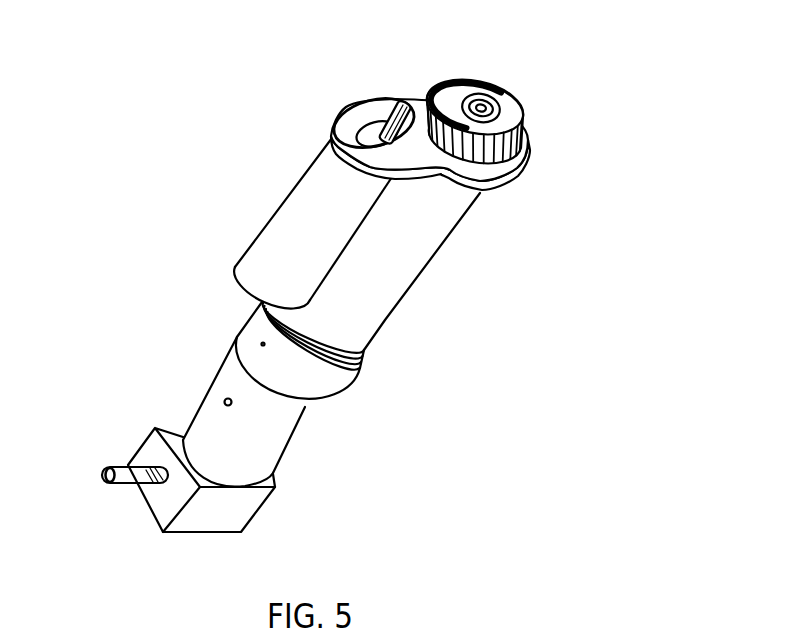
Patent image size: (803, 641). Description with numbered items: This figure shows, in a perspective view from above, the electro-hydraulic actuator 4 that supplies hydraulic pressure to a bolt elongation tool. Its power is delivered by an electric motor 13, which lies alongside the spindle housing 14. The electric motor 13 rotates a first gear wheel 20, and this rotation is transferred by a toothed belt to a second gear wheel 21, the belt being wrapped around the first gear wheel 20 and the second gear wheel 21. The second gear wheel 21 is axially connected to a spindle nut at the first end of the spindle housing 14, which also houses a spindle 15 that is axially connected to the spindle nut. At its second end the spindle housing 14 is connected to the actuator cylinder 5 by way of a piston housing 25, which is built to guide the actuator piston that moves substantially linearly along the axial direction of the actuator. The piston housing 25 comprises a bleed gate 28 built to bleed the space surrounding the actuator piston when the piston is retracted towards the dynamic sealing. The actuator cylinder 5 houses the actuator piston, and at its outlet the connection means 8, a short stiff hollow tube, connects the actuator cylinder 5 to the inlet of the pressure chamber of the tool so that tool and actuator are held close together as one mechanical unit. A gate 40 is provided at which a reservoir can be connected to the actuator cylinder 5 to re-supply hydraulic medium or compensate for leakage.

The electro-hydraulic actuator 4 is at (574, 52).
The actuator cylinder 5 is at (242, 453).
The connection means 8 is at (112, 477).
The electric motor 13 is at (313, 216).
The spindle housing 14 is at (385, 283).
The spindle 15 is at (494, 105).
The first gear wheel 20 is at (383, 110).
The second gear wheel 21 is at (512, 137).
The piston housing 25 is at (313, 387).
The bleed gate 28 is at (257, 344).
The gate 40 is at (217, 402).